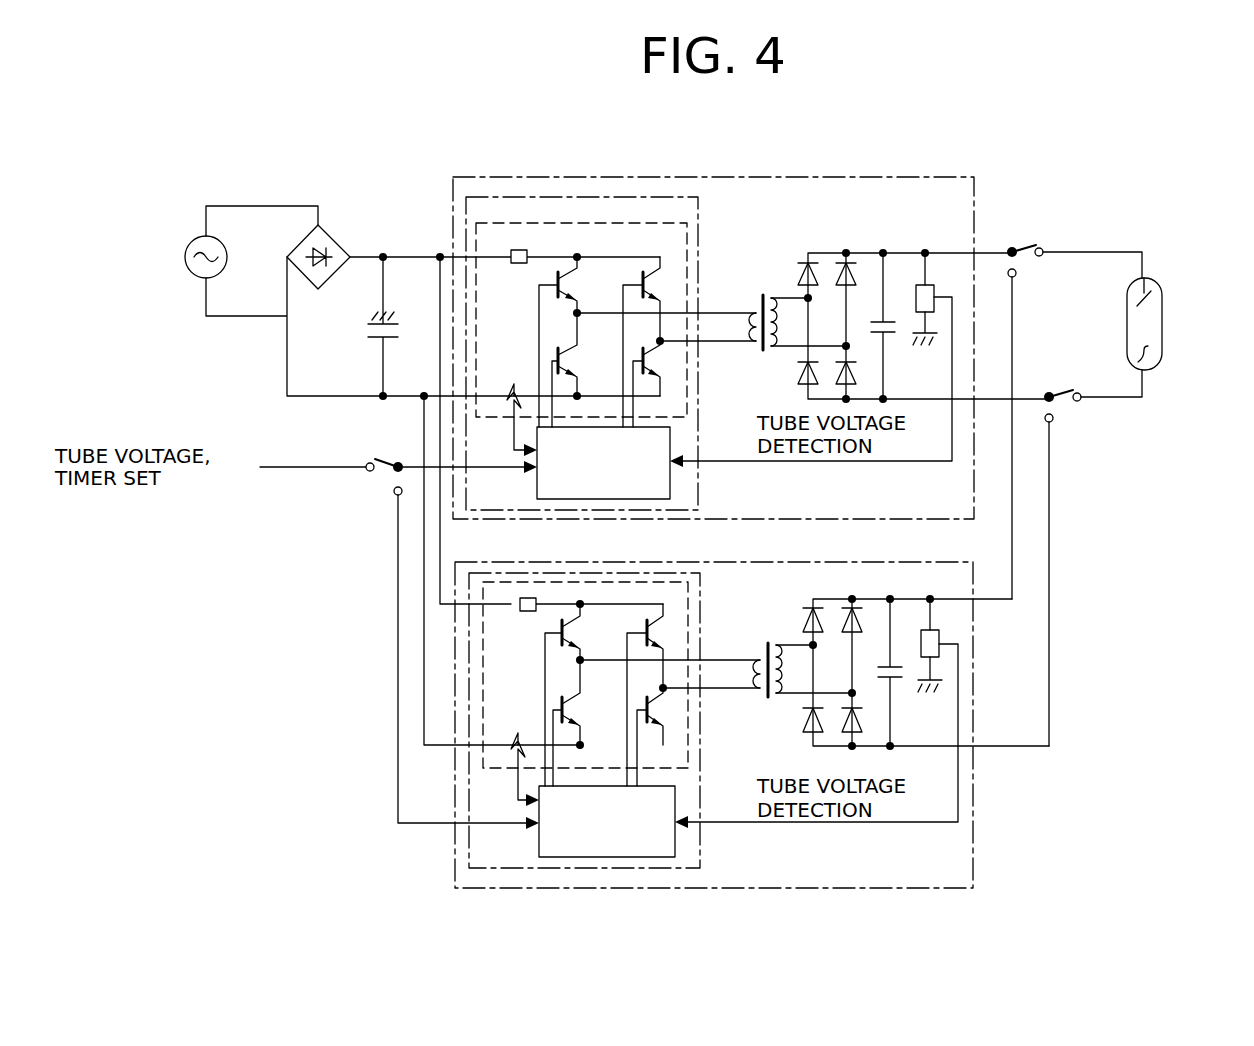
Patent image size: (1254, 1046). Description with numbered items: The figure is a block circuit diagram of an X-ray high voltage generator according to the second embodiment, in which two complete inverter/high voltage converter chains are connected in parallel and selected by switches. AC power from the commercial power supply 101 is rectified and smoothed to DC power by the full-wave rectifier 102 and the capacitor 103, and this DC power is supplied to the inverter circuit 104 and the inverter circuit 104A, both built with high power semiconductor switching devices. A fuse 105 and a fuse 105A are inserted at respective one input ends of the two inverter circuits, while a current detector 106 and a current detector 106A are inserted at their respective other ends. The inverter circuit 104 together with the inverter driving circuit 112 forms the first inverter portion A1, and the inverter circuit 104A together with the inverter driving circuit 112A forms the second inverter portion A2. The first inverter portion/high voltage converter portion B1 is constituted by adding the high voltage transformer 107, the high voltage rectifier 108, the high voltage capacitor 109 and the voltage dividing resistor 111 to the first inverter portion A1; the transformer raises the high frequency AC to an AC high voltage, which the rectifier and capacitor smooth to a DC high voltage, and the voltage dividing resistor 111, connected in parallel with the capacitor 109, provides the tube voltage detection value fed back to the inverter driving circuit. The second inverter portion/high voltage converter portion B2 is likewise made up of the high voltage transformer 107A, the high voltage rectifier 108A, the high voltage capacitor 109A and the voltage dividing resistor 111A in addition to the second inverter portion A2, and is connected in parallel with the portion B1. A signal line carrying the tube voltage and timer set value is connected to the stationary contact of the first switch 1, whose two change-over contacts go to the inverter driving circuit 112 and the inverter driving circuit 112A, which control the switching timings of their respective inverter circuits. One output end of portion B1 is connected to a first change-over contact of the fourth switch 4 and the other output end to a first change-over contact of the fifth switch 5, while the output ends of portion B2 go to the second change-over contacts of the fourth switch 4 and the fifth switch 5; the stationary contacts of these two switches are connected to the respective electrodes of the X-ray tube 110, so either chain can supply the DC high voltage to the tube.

The first switch 1 is at (388, 478).
The fourth switch 4 is at (1020, 261).
The fifth switch 5 is at (1056, 414).
The commercial power supply 101 is at (185, 258).
The full-wave rectifier 102 is at (338, 235).
The capacitor 103 is at (372, 340).
The inverter circuit 104 is at (562, 223).
The inverter circuit 104A is at (592, 590).
The fuse 105 is at (519, 250).
The fuse 105A is at (528, 598).
The current detector 106 is at (514, 384).
The current detector 106A is at (518, 734).
The high voltage transformer 107 is at (760, 292).
The high voltage transformer 107A is at (764, 644).
The high voltage rectifier 108 is at (823, 253).
The high voltage rectifier 108A is at (815, 600).
The high voltage capacitor 109 is at (883, 320).
The high voltage capacitor 109A is at (892, 660).
The X-ray tube 110 is at (1162, 314).
The voltage dividing resistor 111 is at (944, 283).
The voltage dividing resistor 111A is at (940, 637).
The inverter driving circuit 112 is at (670, 479).
The inverter driving circuit 112A is at (675, 839).
The first inverter portion A1 is at (654, 197).
The second inverter portion A2 is at (543, 868).
The first inverter portion/high voltage converter portion B1 is at (750, 177).
The second inverter portion/high voltage converter portion B2 is at (648, 892).